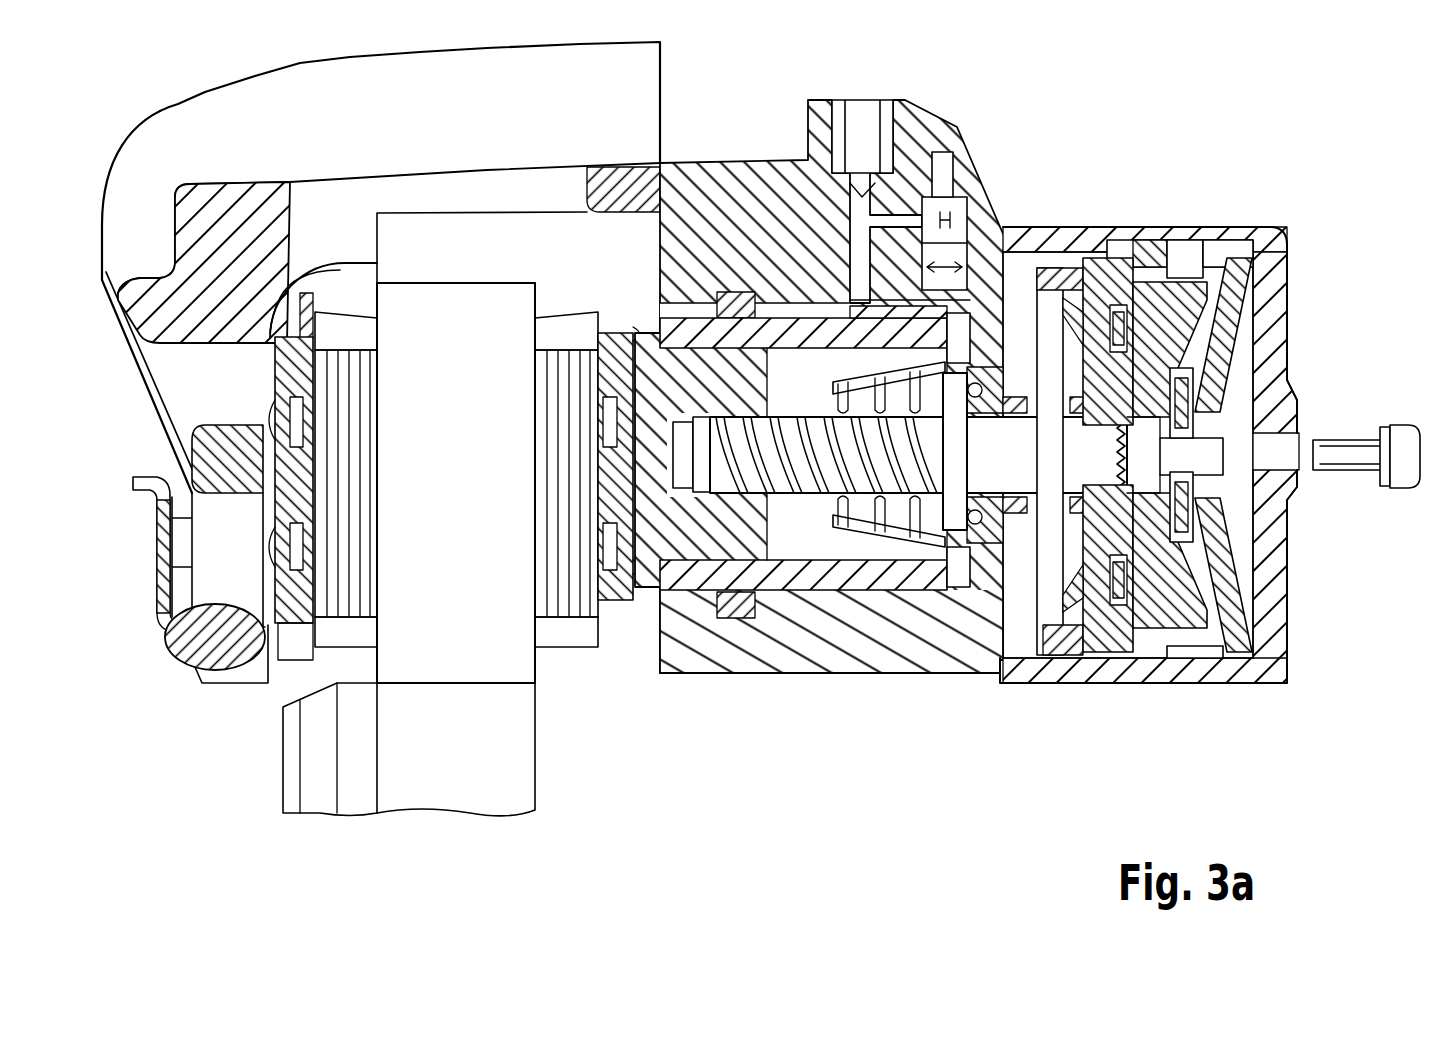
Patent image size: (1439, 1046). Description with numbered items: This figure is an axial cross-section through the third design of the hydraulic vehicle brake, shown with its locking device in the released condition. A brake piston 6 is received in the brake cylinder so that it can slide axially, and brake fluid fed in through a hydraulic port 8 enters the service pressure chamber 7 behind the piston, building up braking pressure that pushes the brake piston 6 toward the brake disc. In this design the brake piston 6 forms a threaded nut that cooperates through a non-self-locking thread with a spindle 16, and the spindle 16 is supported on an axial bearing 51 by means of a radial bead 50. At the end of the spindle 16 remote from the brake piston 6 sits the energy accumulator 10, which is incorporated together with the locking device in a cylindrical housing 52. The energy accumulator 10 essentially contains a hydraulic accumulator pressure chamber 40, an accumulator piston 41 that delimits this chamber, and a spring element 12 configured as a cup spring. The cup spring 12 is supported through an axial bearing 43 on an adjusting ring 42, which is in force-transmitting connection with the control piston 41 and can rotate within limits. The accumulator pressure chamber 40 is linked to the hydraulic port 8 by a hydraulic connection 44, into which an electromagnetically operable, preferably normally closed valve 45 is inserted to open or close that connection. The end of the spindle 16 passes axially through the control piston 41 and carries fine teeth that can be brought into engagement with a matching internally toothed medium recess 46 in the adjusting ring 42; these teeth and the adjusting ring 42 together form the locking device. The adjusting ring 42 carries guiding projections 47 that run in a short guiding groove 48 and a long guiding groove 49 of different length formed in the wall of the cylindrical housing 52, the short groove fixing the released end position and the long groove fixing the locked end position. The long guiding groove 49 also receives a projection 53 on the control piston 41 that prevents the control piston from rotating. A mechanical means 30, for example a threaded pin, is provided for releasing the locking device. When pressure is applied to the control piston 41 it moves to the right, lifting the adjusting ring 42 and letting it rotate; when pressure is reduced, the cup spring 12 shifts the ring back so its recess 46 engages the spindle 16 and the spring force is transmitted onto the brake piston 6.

The brake piston 6 is at (731, 545).
The service pressure chamber 7 is at (805, 535).
The hydraulic port 8 is at (880, 130).
The energy accumulator 10 is at (1236, 355).
The spring element 12 is at (1237, 640).
The spindle 16 is at (768, 487).
The mechanical means for releasing the locking device 30 is at (1410, 490).
The accumulator pressure chamber 40 is at (1028, 617).
The accumulator piston 41 is at (1103, 613).
The adjusting ring 42 is at (1147, 610).
The axial bearing 43 is at (1178, 408).
The hydraulic connection 44 is at (893, 217).
The valve 45 is at (950, 173).
The medium recess 46 is at (1133, 488).
The guiding projections 47 is at (1187, 247).
The short guiding groove 48 is at (1217, 662).
The long guiding groove 49 is at (1233, 240).
The radial bead 50 is at (950, 520).
The axial bearing 51 is at (975, 525).
The cylindrical housing 52 is at (1078, 628).
The projection 53 is at (1157, 243).